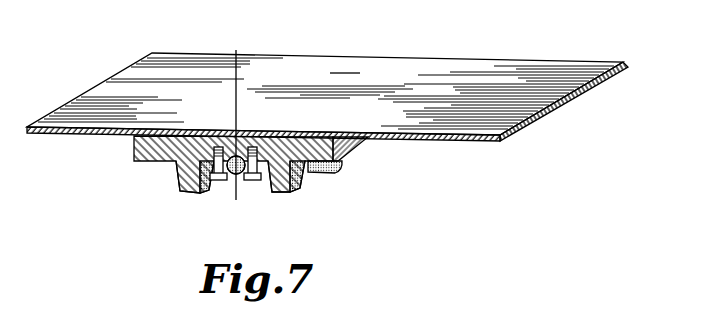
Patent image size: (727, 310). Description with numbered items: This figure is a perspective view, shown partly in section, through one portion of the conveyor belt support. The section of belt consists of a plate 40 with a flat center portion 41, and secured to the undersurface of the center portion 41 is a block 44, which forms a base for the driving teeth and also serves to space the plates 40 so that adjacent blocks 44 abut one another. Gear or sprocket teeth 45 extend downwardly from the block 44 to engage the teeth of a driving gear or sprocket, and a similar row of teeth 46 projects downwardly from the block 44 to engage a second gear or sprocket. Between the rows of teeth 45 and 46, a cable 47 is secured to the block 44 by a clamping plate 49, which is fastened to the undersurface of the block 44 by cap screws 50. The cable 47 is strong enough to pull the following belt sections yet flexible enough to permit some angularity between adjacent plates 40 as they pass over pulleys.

The plate 40 is at (401, 77).
The flat center portion 41 is at (345, 78).
The block 44 is at (345, 142).
The gear or sprocket teeth 45 is at (291, 186).
The row of teeth 46 is at (187, 180).
The cable 47 is at (239, 115).
The clamping plate 49 is at (236, 200).
The cap screws 50 is at (207, 167).